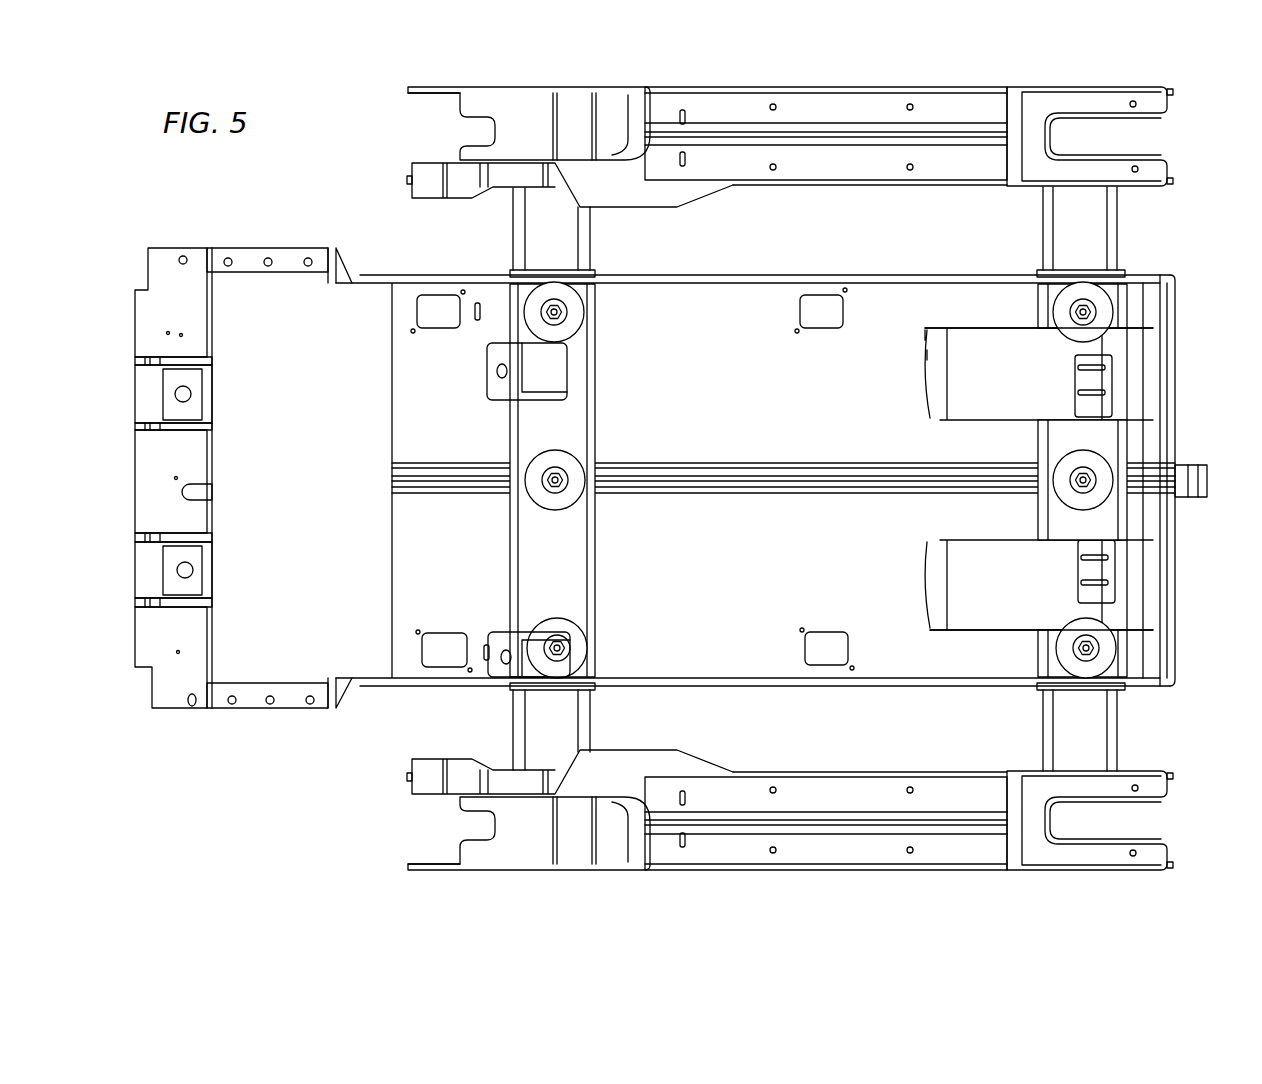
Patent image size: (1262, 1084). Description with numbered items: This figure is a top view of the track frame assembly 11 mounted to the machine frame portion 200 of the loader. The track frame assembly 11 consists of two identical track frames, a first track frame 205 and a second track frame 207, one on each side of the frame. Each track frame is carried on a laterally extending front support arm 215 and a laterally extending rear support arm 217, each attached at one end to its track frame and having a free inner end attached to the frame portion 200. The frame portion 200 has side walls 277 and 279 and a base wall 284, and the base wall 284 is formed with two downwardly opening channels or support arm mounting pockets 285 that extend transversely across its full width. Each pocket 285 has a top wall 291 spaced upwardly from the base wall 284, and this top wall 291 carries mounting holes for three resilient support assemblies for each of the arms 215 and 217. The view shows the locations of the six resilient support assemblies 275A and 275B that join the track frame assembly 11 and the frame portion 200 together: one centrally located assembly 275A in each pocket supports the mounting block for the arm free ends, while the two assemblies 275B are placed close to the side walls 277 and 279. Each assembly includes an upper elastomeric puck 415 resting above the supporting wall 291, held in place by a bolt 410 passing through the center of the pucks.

The track frame assembly 11 is at (482, 212).
The frame portion 200 is at (700, 280).
The first track frame 205 is at (795, 780).
The second track frame 207 is at (813, 168).
The front support arm 215 is at (1058, 237).
The rear support arm 217 is at (580, 239).
The resilient support assembly 275A is at (550, 452).
The resilient support assembly 275B is at (530, 315).
The side wall 277 is at (745, 287).
The side wall 279 is at (892, 673).
The base wall 284 is at (747, 640).
The support arm mounting pocket 285 is at (597, 309).
The top wall 291 is at (573, 370).
The bolt 410 is at (1077, 320).
The upper elastomeric puck 415 is at (1095, 293).